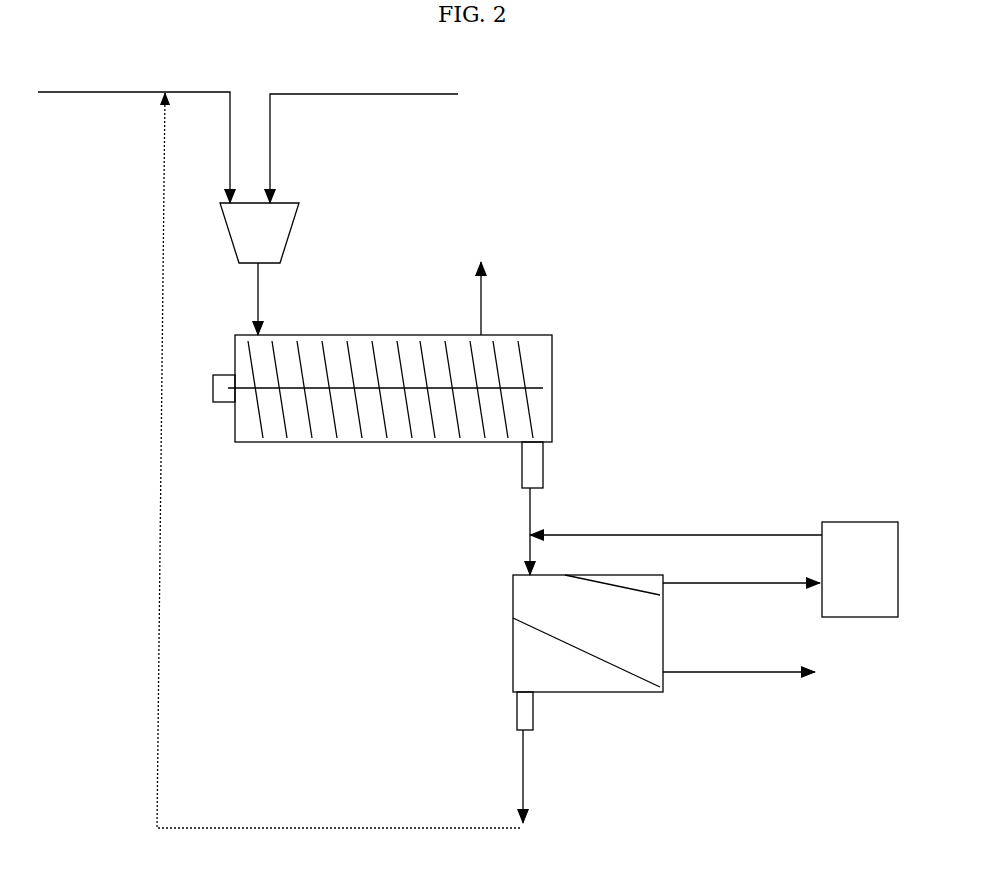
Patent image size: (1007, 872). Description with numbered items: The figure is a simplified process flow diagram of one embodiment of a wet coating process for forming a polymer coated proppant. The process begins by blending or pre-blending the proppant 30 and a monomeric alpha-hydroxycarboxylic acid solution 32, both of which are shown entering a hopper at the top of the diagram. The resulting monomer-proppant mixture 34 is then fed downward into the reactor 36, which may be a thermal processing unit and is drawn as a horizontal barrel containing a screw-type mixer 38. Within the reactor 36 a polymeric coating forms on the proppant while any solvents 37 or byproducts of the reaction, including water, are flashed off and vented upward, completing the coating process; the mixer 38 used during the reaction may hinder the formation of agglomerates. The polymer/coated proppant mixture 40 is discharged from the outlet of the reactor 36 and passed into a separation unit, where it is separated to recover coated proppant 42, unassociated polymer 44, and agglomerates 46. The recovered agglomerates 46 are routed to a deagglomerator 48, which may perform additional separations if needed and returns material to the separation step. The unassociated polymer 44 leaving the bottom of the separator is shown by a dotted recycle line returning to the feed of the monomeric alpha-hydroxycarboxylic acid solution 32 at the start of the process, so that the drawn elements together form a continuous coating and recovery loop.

The proppant 30 is at (364, 135).
The monomeric alpha-hydroxycarboxylic acid solution 32 is at (134, 133).
The monomer-proppant mixture 34 is at (273, 299).
The reactor 36 is at (390, 335).
The solvents 37 is at (482, 285).
The mixer 38 is at (523, 375).
The polymer/coated proppant mixture 40 is at (515, 531).
The coated proppant 42 is at (739, 661).
The unassociated polymer 44 is at (542, 776).
The agglomerates 46 is at (741, 570).
The deagglomerator 48 is at (714, 569).